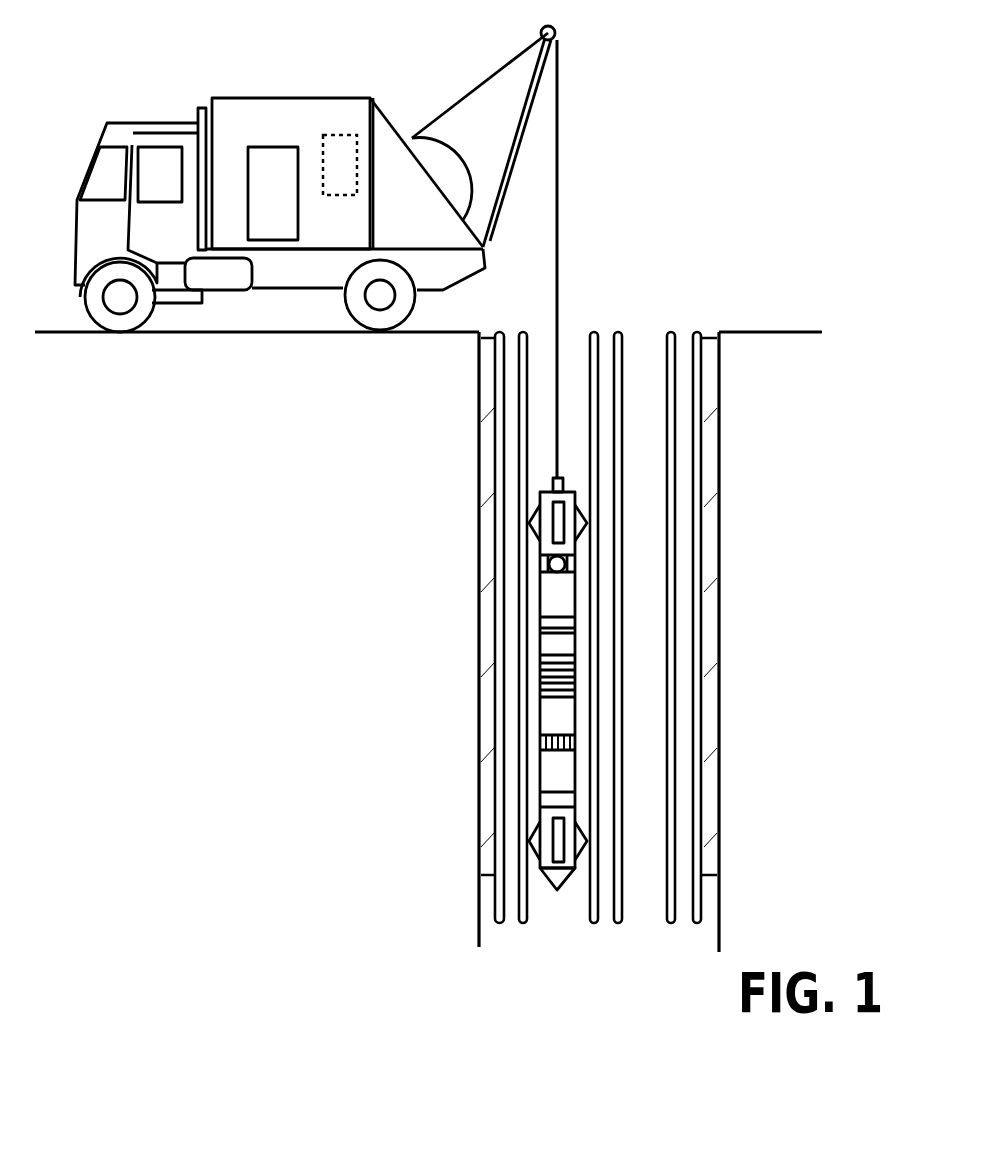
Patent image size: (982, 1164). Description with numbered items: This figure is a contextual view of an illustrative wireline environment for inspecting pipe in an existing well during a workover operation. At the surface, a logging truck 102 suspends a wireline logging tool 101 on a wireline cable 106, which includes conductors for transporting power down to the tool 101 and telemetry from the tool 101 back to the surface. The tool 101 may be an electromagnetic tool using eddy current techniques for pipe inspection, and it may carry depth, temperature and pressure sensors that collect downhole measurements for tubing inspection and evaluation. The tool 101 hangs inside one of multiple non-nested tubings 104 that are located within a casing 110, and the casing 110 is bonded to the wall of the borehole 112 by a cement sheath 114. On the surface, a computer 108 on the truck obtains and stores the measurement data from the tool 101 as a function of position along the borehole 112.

The wireline logging tool 101 is at (526, 527).
The logging truck 102 is at (237, 97).
The non-nested tubings 104 is at (664, 311).
The wireline cable 106 is at (560, 315).
The computer 108 is at (345, 135).
The casing 110 is at (502, 458).
The borehole 112 is at (478, 408).
The cement sheath 114 is at (488, 578).